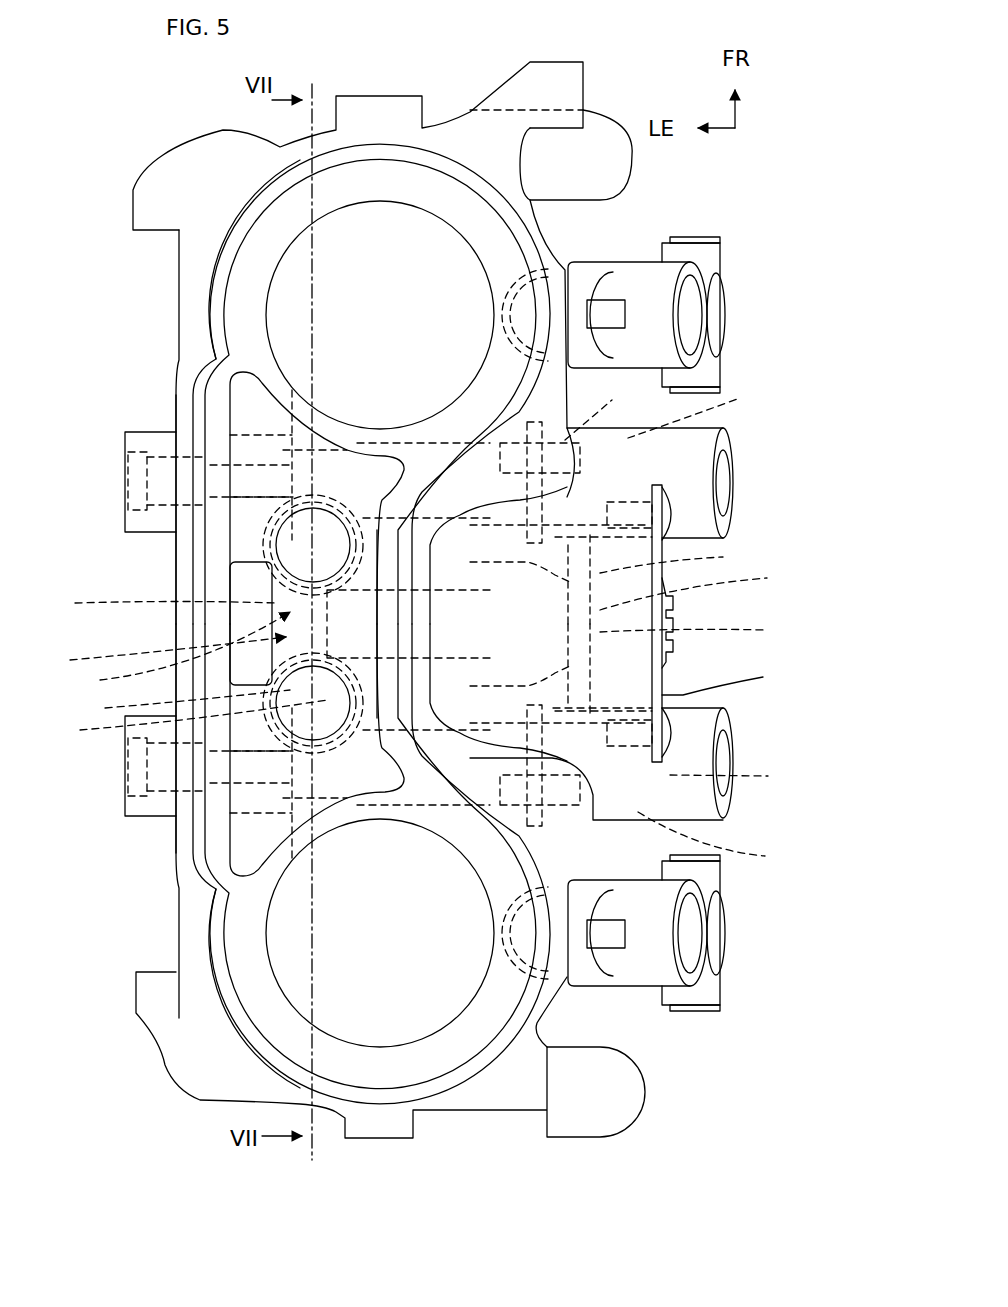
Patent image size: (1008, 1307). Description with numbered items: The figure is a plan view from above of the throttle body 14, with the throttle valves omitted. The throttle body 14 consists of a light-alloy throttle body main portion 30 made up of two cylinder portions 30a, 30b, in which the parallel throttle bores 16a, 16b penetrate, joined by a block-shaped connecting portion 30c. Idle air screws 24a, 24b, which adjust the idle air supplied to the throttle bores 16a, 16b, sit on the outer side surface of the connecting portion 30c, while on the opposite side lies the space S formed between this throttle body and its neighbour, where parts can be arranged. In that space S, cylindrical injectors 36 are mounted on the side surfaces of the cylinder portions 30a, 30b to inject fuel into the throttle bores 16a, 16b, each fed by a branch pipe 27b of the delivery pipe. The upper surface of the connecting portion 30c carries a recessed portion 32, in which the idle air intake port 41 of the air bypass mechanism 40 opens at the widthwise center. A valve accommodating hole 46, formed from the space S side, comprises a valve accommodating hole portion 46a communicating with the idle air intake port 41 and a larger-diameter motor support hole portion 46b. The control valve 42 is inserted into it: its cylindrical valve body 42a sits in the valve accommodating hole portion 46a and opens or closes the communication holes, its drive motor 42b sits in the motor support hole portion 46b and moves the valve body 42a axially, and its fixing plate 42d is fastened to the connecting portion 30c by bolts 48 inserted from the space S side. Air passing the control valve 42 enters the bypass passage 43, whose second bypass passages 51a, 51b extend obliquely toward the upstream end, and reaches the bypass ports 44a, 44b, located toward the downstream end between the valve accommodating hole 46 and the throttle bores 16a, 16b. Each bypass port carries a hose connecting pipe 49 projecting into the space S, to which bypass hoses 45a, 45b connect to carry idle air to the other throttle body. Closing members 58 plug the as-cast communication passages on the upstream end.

The throttle body 14 is at (176, 318).
The throttle bore 16a is at (395, 213).
The throttle bore 16b is at (373, 1047).
The idle air screw 24a is at (130, 490).
The idle air screw 24b is at (130, 790).
The branch pipe 27b is at (668, 270).
The throttle body main portion 30 is at (166, 575).
The cylinder portion 30a is at (233, 255).
The cylinder portion 30b is at (228, 990).
The connecting portion 30c is at (290, 625).
The recessed portion 32 is at (253, 522).
The injector 36 is at (585, 273).
The air bypass mechanism 40 is at (178, 652).
The idle air intake port 41 is at (232, 590).
The control valve 42 is at (677, 602).
The valve body 42a is at (177, 705).
The drive motor 42b is at (706, 588).
The fixing plate 42d is at (737, 681).
The bypass passage 43 is at (160, 655).
The bypass port 44a is at (610, 409).
The bypass port 44b is at (741, 775).
The bypass hose 45a is at (723, 430).
The bypass hose 45b is at (737, 813).
The valve accommodating hole 46 is at (667, 655).
The valve accommodating hole portion 46a is at (705, 632).
The motor support hole portion 46b is at (683, 557).
The bolt 48 is at (730, 483).
The hose connecting pipe 49 is at (713, 624).
The second bypass passage 51a is at (182, 721).
The second bypass passage 51b is at (152, 603).
The closing member 58 is at (272, 557).
The space S is at (778, 520).